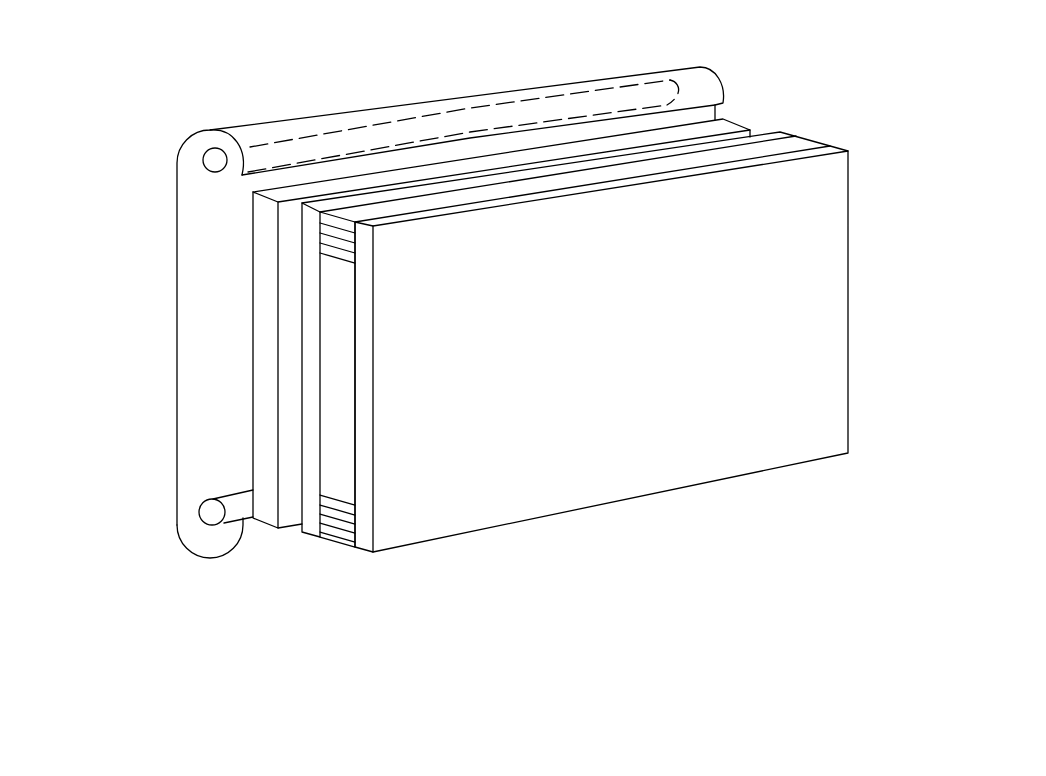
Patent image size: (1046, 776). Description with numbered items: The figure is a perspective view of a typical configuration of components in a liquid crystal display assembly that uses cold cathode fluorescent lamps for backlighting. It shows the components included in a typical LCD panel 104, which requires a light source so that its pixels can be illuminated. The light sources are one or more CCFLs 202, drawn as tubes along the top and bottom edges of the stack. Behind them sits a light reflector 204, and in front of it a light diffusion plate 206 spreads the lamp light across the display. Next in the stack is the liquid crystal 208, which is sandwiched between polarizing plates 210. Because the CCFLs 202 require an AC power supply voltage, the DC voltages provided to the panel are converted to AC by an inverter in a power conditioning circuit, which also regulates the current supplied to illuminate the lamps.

The LCD panel 104 is at (843, 62).
The CCFLs 202 is at (213, 160).
The light reflector 204 is at (176, 285).
The light diffusion plate 206 is at (252, 365).
The liquid crystal 208 is at (342, 546).
The polarizing plates 210 is at (310, 537).